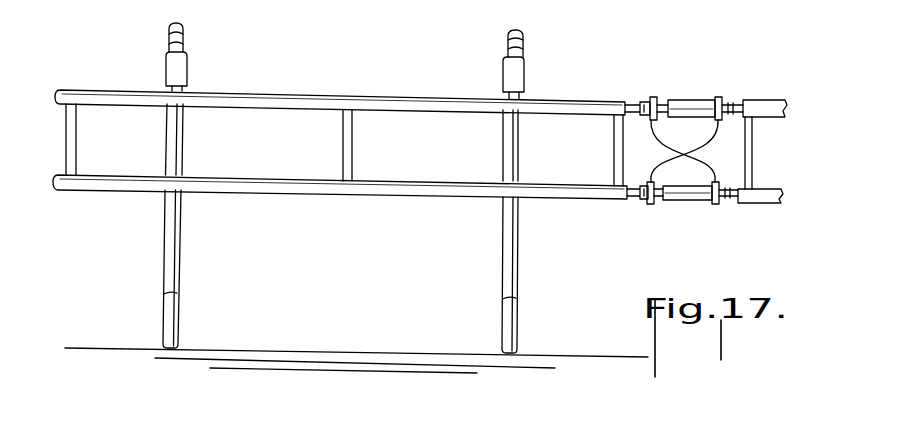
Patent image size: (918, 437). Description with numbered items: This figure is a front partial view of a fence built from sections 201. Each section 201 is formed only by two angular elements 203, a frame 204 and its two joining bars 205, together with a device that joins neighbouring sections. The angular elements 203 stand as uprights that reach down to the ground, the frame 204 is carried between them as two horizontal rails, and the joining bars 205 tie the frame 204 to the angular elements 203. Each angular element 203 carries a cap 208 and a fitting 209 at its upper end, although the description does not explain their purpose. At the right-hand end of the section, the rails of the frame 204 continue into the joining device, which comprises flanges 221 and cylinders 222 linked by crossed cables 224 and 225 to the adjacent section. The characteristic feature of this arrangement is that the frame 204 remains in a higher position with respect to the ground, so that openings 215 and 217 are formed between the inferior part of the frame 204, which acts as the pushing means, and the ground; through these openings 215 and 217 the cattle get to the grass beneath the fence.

The section 201 is at (345, 199).
The angular element 203 is at (184, 263).
The frame 204 is at (438, 201).
The joining bar 205 is at (182, 221).
The cap 208 is at (168, 36).
The post top fitting 209 is at (188, 68).
The opening 215 is at (375, 306).
The opening 217 is at (108, 260).
The flange 221 is at (660, 97).
The coupling cylinder 222 is at (697, 101).
The cable 224 is at (650, 149).
The cable 225 is at (710, 144).